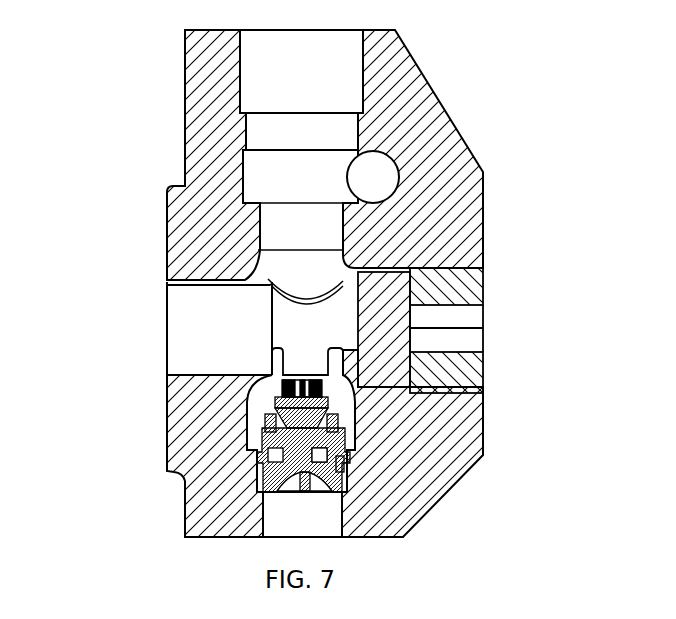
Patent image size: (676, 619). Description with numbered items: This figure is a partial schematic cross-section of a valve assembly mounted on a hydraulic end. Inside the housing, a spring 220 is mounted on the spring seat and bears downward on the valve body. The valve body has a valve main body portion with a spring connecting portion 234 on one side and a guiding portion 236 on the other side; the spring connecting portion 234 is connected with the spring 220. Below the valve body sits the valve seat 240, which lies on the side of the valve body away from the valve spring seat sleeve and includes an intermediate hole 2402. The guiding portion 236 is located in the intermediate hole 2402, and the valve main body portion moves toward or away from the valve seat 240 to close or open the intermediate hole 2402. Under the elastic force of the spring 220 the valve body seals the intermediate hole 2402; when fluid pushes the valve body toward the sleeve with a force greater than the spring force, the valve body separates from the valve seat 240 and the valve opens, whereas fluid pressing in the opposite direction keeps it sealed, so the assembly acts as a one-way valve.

The spring 220 is at (280, 400).
The spring connecting portion 234 is at (330, 406).
The intermediate hole 2402 is at (325, 454).
The guiding portion 236 is at (342, 464).
The valve seat 240 is at (332, 424).